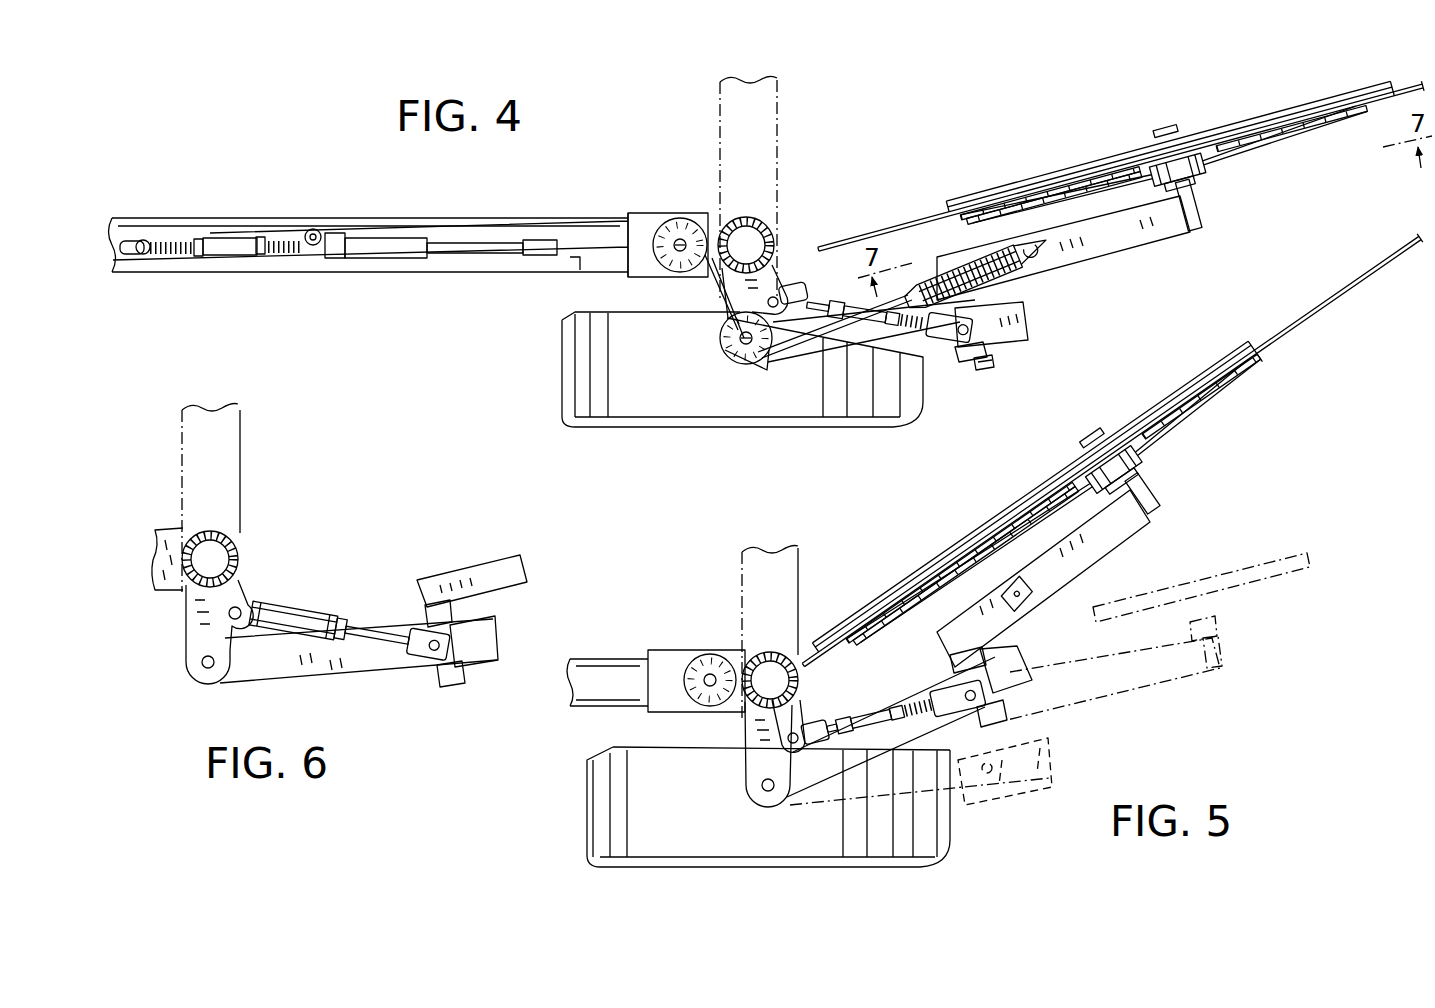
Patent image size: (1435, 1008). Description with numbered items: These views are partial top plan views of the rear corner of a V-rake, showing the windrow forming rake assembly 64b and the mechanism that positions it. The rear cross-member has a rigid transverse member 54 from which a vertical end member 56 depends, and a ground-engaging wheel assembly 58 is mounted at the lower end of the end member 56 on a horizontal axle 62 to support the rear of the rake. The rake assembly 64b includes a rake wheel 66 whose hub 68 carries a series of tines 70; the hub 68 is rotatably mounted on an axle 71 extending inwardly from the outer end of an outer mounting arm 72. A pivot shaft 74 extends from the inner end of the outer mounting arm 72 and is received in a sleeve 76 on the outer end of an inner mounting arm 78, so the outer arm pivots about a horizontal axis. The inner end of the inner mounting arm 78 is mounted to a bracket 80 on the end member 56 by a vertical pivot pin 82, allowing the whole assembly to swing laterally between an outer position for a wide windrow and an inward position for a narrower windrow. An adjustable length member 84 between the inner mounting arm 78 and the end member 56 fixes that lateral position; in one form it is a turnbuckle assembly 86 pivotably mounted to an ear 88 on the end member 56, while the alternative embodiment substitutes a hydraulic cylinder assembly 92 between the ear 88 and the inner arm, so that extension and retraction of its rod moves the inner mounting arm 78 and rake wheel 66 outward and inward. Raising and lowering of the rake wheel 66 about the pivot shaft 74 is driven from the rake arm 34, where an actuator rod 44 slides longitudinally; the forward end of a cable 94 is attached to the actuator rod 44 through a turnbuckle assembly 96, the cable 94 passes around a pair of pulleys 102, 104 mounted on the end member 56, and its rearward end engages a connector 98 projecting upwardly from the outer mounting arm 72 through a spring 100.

In FIG. 4, the rake arm 34 is at (323, 213).
In FIG. 5, the rake arm 34 is at (584, 657).
In FIG. 4, the actuator rod 44 is at (127, 232).
In FIG. 4, the transverse member 54 is at (778, 127).
In FIG. 5, the transverse member 54 is at (737, 573).
In FIG. 6, the transverse member 54 is at (246, 462).
In FIG. 4, the end member 56 is at (753, 220).
In FIG. 5, the end member 56 is at (770, 653).
In FIG. 6, the end member 56 is at (221, 533).
In FIG. 5, the ground-engaging wheel assembly 58 is at (578, 848).
In FIG. 5, the horizontal axle 62 is at (733, 735).
In FIG. 4, the windrow forming rake assembly 64b is at (1126, 183).
In FIG. 5, the windrow forming rake assembly 64b is at (1116, 501).
In FIG. 4, the rake wheel 66 is at (1232, 112).
In FIG. 5, the rake wheel 66 is at (1175, 378).
In FIG. 4, the hub 68 is at (1205, 182).
In FIG. 5, the hub 68 is at (1149, 443).
In FIG. 4, the tines 70 is at (1406, 92).
In FIG. 5, the tines 70 is at (1358, 280).
In FIG. 5, the axle 71 is at (1157, 499).
In FIG. 4, the outer mounting arm 72 is at (1122, 255).
In FIG. 5, the outer mounting arm 72 is at (1097, 566).
In FIG. 6, the outer mounting arm 72 is at (477, 563).
In FIG. 4, the pivot shaft 74 is at (992, 366).
In FIG. 5, the pivot shaft 74 is at (985, 652).
In FIG. 4, the sleeve 76 is at (1007, 348).
In FIG. 5, the sleeve 76 is at (1000, 636).
In FIG. 4, the inner mounting arm 78 is at (1030, 322).
In FIG. 5, the inner mounting arm 78 is at (843, 790).
In FIG. 5, the bracket 80 is at (742, 773).
In FIG. 5, the vertical pivot pin 82 is at (770, 793).
In FIG. 4, the adjustable length member 84 is at (850, 295).
In FIG. 5, the adjustable length member 84 is at (856, 683).
In FIG. 6, the adjustable length member 84 is at (304, 580).
In FIG. 4, the turnbuckle assembly 86 is at (860, 332).
In FIG. 5, the turnbuckle assembly 86 is at (858, 722).
In FIG. 4, the ear 88 is at (782, 276).
In FIG. 5, the ear 88 is at (803, 711).
In FIG. 6, the hydraulic cylinder assembly 92 is at (328, 608).
In FIG. 4, the cable 94 is at (542, 213).
In FIG. 4, the turnbuckle assembly 96 is at (223, 235).
In FIG. 4, the connector 98 is at (1040, 243).
In FIG. 5, the connector 98 is at (1013, 577).
In FIG. 4, the spring 100 is at (920, 280).
In FIG. 4, the pulley 102 is at (683, 220).
In FIG. 4, the pulley 104 is at (713, 360).